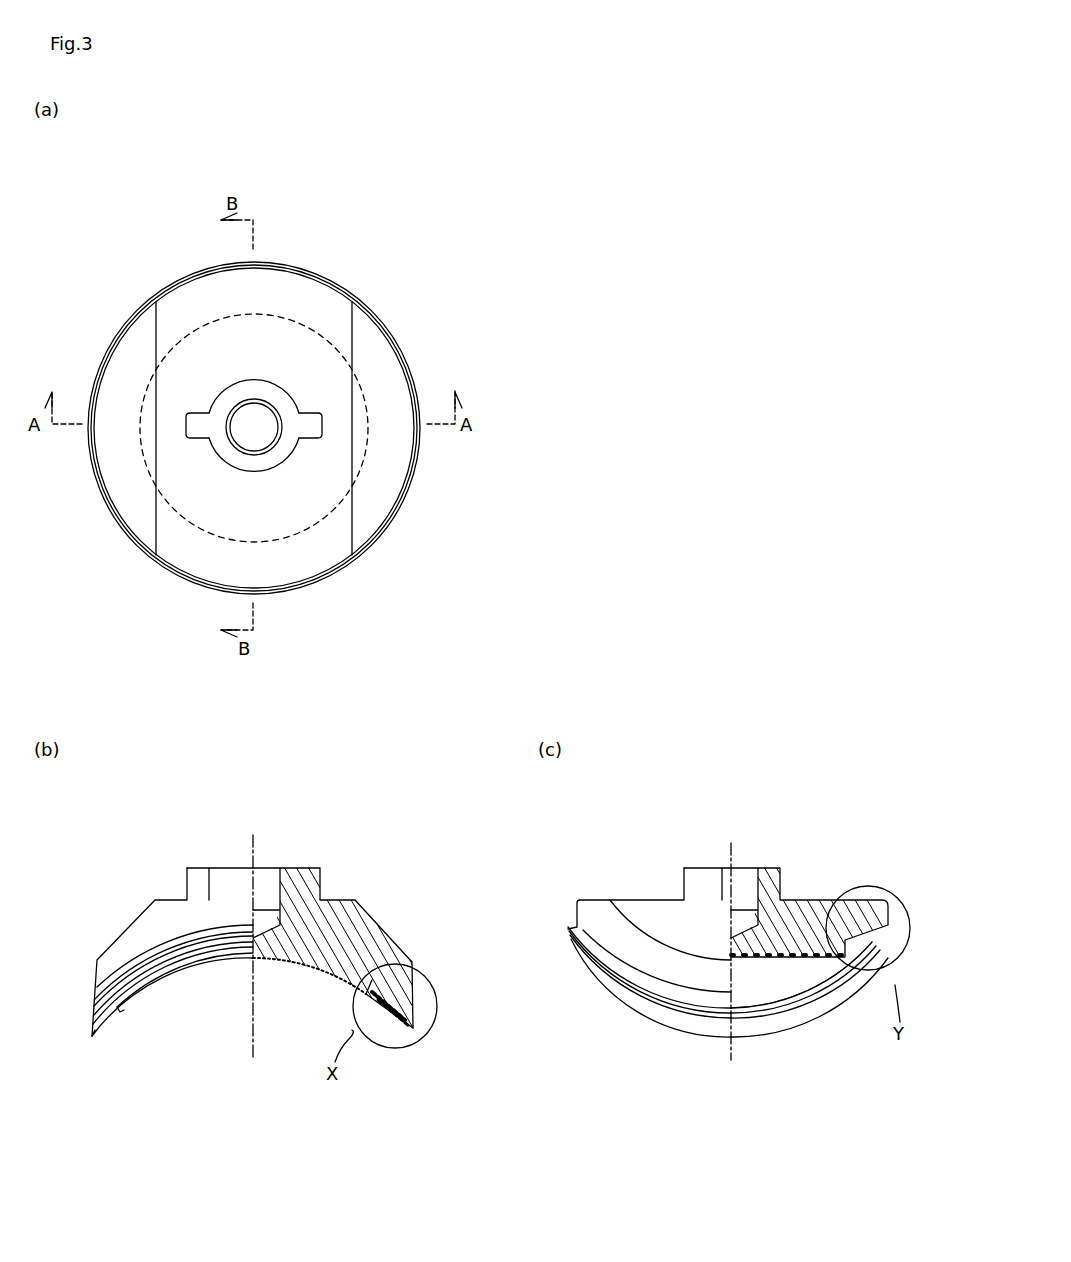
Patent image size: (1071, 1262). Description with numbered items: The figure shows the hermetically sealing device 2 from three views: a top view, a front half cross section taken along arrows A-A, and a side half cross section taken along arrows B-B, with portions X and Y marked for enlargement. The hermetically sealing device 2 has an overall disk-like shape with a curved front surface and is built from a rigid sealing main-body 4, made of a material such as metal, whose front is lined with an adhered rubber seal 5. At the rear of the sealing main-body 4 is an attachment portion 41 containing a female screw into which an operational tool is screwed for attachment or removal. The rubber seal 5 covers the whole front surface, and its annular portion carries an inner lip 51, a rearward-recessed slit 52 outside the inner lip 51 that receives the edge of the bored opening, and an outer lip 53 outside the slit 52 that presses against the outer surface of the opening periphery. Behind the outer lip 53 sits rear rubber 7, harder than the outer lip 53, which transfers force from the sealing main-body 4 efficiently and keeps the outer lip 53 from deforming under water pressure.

The hermetically sealing device 2 is at (410, 348).
The sealing main-body 4 is at (205, 296).
The rubber seal 5 is at (378, 531).
The rear rubber 7 is at (92, 1000).
The attachment portion 41 is at (263, 436).
The inner lip 51 is at (388, 1015).
The slit 52 is at (117, 1015).
The outer lip 53 is at (100, 1040).